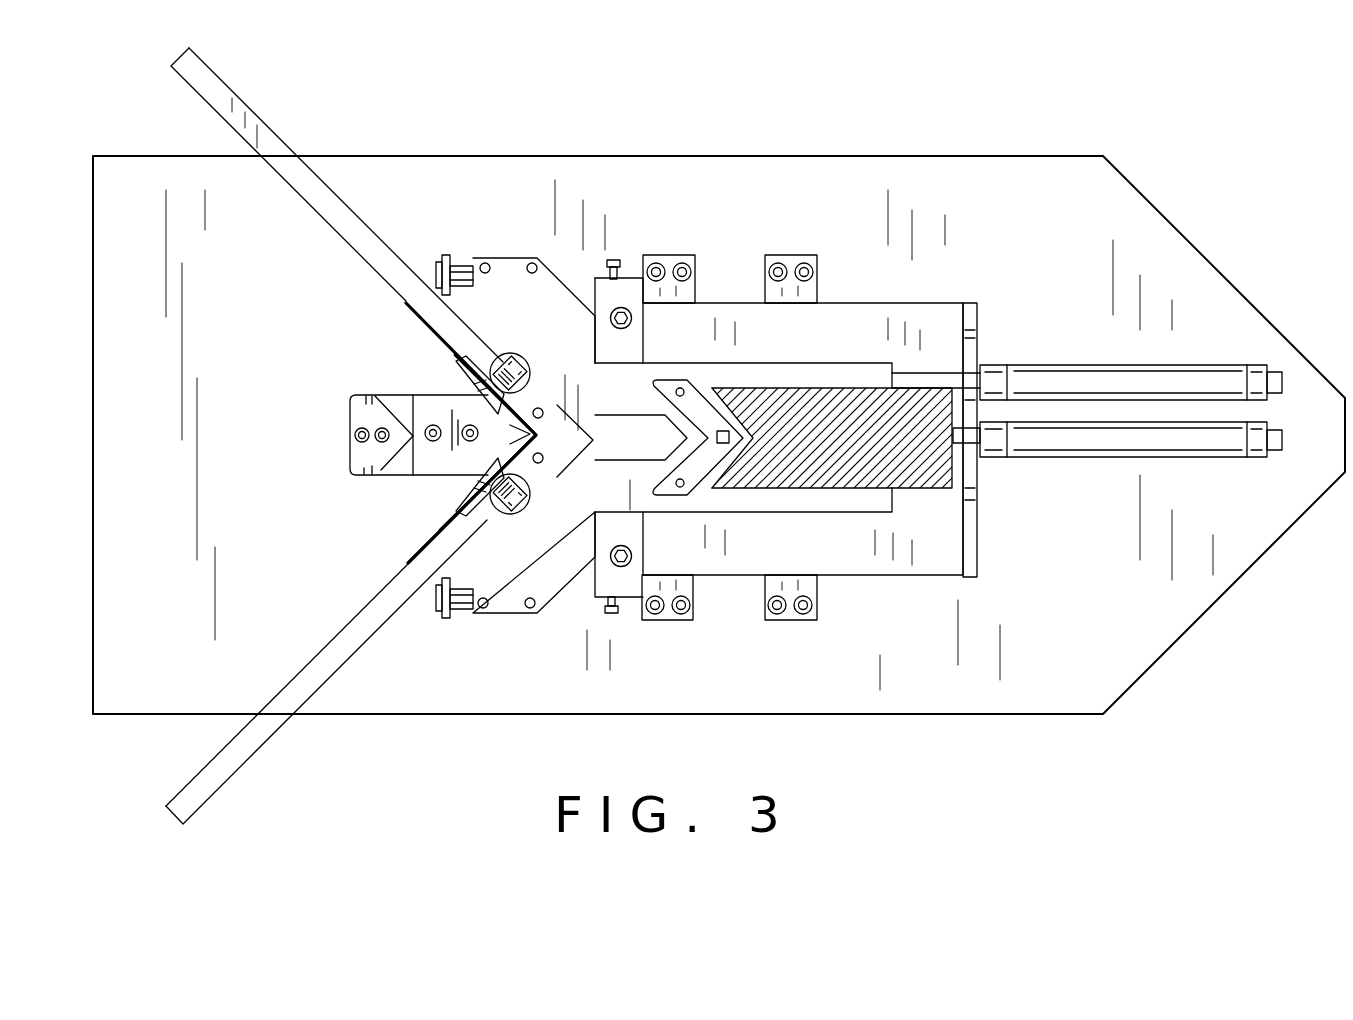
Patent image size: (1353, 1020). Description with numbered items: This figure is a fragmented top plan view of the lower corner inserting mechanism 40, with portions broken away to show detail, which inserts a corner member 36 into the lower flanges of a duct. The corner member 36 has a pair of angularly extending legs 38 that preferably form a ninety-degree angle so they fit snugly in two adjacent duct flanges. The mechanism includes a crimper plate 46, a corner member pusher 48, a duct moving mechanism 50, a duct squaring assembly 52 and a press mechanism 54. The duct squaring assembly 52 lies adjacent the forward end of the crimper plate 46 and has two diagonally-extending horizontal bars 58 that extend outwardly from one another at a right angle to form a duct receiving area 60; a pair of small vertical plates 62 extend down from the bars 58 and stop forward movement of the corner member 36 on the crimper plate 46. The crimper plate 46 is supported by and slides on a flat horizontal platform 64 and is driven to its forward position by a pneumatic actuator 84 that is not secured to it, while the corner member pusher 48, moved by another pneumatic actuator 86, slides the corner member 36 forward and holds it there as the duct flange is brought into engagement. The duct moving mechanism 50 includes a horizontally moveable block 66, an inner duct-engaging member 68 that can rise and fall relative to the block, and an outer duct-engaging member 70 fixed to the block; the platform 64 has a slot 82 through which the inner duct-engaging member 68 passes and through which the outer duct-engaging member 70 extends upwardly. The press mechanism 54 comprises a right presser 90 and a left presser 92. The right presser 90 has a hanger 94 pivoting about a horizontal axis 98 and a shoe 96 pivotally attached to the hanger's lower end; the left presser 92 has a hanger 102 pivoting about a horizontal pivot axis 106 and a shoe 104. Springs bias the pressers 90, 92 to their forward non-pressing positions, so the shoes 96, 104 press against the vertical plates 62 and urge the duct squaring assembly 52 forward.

The lower corner inserting mechanism 40 is at (697, 112).
The corner member 36 is at (698, 488).
The legs 38 is at (700, 403).
The crimper plate 46 is at (818, 500).
The corner member pusher 48 is at (833, 387).
The duct moving mechanism 50 is at (413, 467).
The duct squaring assembly 52 is at (352, 255).
The press mechanism 54 is at (512, 340).
The diagonally-extending horizontal bars 58 is at (327, 207).
The duct receiving area 60 is at (427, 380).
The vertical plates 62 is at (410, 305).
The platform 64 is at (329, 435).
The horizontally moveable block 66 is at (400, 410).
The inner duct-engaging member 68 is at (368, 457).
The outer duct-engaging member 70 is at (443, 457).
The slot 82 is at (367, 468).
The pneumatic actuator 84 is at (1033, 363).
The pneumatic actuator 86 is at (1090, 455).
The right presser 90 is at (527, 480).
The left presser 92 is at (523, 380).
The hanger 94 is at (490, 520).
The shoe 96 is at (517, 505).
The horizontal axis 98 is at (473, 613).
The hanger 102 is at (478, 360).
The shoe 104 is at (520, 353).
The horizontal pivot axis 106 is at (460, 252).